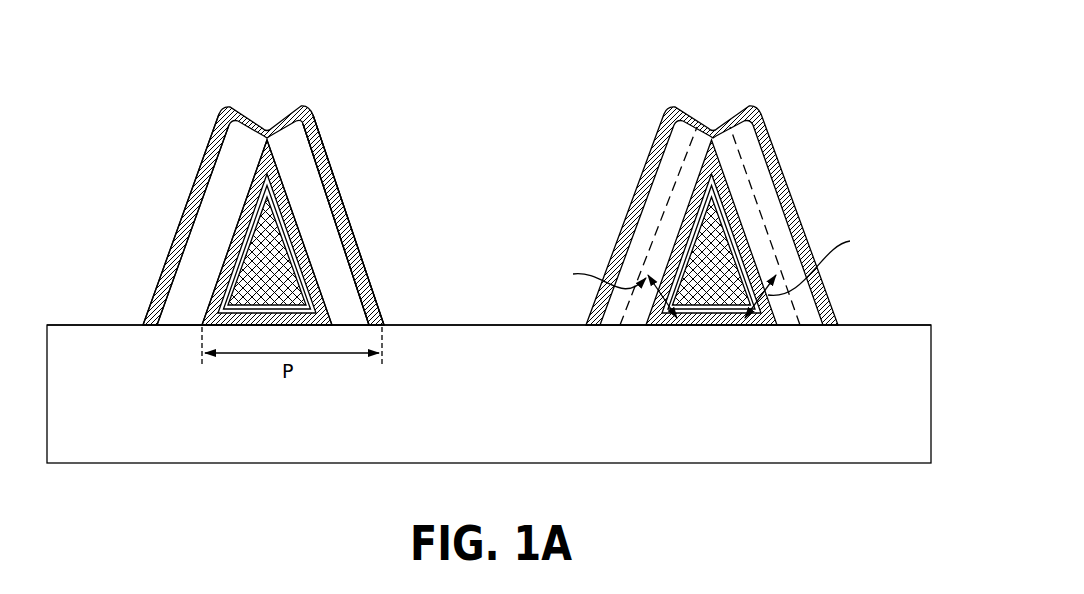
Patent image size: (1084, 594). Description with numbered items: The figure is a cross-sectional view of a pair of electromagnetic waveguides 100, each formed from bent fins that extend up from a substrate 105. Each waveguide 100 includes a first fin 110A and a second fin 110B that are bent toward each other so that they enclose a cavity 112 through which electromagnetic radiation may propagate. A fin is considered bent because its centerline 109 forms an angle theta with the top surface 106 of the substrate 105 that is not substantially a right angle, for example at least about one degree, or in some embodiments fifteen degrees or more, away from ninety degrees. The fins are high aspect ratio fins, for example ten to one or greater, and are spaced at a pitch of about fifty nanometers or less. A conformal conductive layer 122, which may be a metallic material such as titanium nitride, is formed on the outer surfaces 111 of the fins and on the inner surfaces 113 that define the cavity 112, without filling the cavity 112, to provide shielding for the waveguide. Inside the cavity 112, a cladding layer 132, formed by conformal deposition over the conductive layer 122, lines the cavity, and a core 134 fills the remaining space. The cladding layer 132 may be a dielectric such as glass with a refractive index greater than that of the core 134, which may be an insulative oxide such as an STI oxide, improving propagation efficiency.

The electromagnetic waveguide 100 is at (458, 171).
The substrate 105 is at (508, 414).
The top surface of substrate 106 is at (881, 323).
The centerline 109 is at (677, 173).
The first fin 110A is at (198, 257).
The second fin 110B is at (340, 270).
The outer surfaces of the fins 111 is at (206, 156).
The cavity 112 is at (262, 283).
The inner surfaces of the fins 113 is at (211, 293).
The conductive layer 122 is at (310, 107).
The cladding layer 132 is at (318, 311).
The core 134 is at (303, 247).